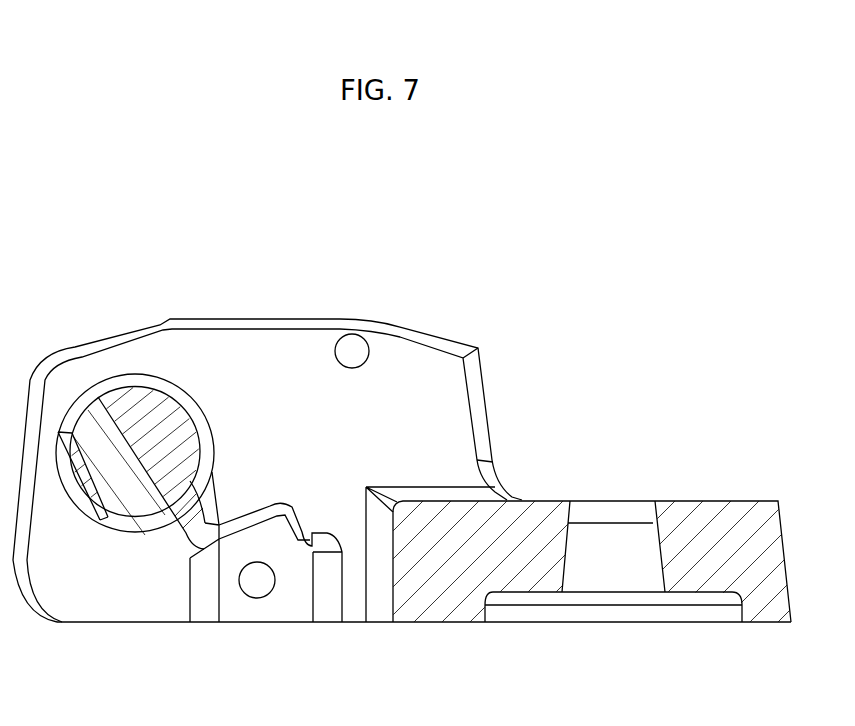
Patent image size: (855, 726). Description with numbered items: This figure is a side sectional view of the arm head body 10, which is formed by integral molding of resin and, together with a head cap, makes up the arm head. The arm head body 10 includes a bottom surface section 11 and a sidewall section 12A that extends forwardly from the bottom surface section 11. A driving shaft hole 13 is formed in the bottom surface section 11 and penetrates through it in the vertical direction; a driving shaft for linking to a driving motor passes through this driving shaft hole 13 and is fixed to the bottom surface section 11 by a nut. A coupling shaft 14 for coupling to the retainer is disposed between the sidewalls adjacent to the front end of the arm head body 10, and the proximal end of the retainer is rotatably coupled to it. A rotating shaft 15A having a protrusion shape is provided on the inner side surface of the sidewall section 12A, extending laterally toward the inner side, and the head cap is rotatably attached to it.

The arm head body 10 is at (559, 352).
The bottom surface section 11 is at (765, 500).
The sidewall section 12A is at (253, 368).
The driving shaft hole 13 is at (655, 542).
The coupling shaft 14 is at (108, 390).
The rotating shaft 15A is at (368, 356).